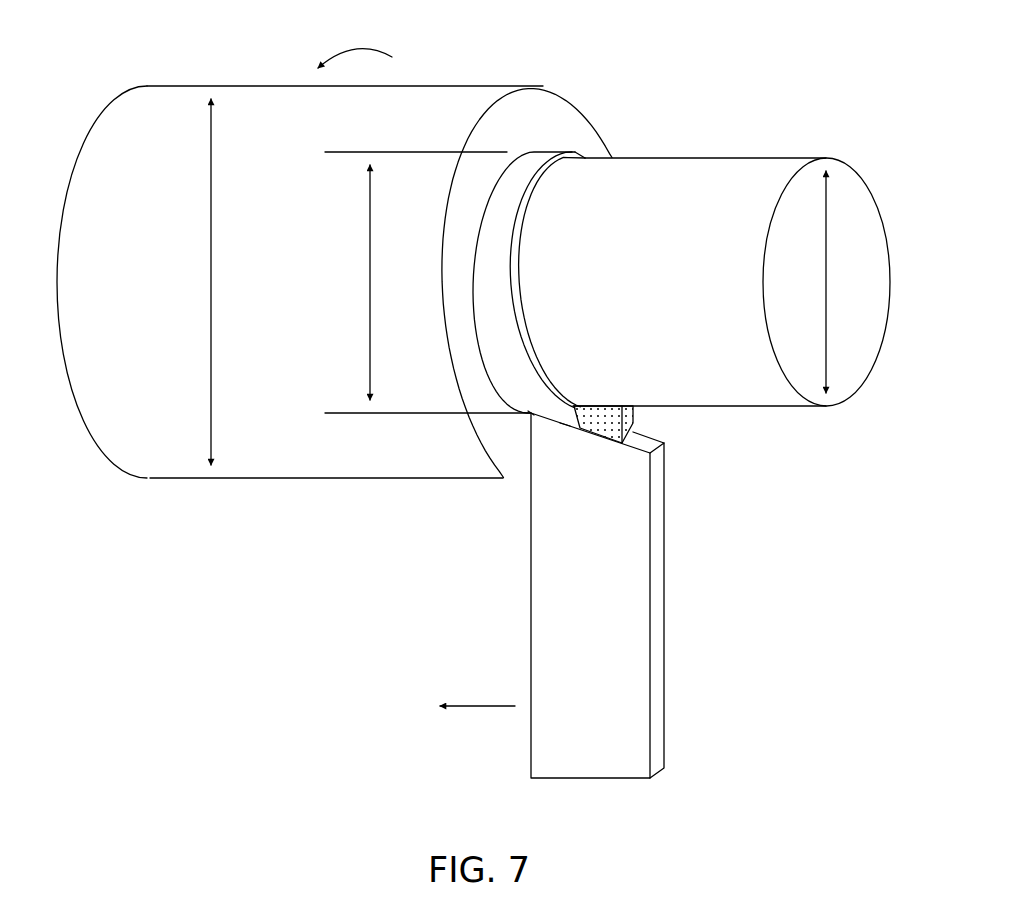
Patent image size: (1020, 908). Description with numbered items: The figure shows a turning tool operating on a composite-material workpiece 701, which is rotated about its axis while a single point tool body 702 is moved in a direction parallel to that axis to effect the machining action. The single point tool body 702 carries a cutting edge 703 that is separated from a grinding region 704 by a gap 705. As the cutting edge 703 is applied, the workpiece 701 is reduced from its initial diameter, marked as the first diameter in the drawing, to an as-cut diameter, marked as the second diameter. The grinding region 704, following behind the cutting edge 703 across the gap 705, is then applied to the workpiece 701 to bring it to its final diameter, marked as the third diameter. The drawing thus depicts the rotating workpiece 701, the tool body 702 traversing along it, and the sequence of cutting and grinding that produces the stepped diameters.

The workpiece 701 is at (447, 86).
The single point tool body 702 is at (622, 687).
The cutting edge 703 is at (530, 415).
The grinding region 704 is at (617, 420).
The gap 705 is at (565, 418).